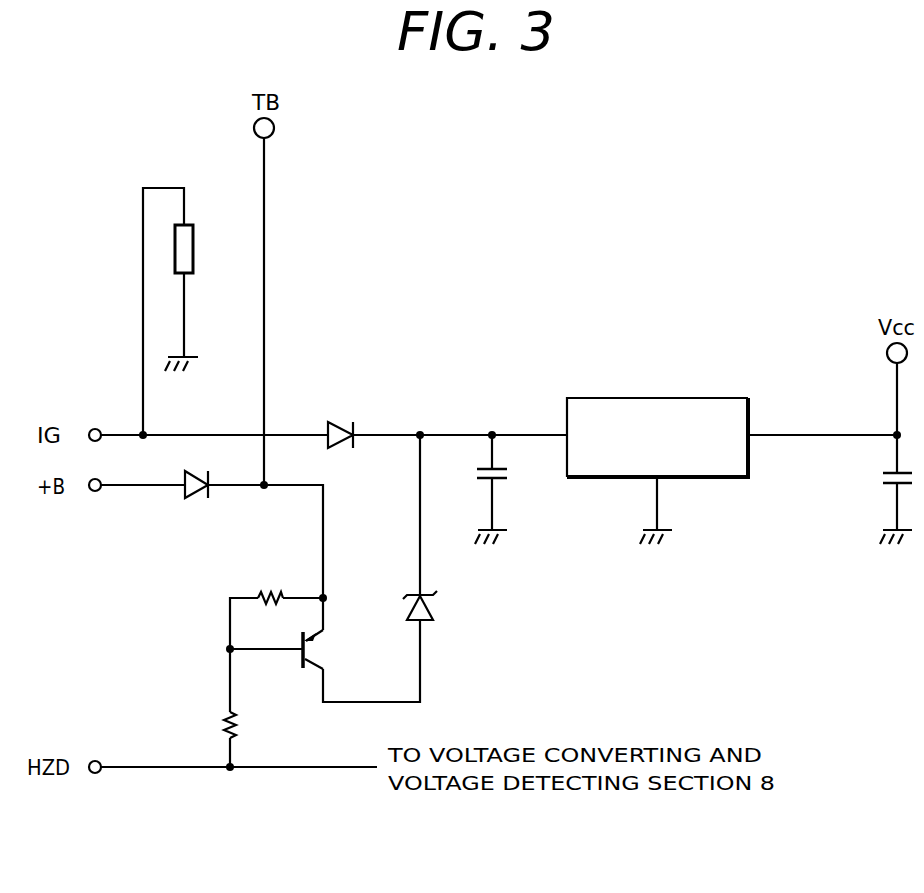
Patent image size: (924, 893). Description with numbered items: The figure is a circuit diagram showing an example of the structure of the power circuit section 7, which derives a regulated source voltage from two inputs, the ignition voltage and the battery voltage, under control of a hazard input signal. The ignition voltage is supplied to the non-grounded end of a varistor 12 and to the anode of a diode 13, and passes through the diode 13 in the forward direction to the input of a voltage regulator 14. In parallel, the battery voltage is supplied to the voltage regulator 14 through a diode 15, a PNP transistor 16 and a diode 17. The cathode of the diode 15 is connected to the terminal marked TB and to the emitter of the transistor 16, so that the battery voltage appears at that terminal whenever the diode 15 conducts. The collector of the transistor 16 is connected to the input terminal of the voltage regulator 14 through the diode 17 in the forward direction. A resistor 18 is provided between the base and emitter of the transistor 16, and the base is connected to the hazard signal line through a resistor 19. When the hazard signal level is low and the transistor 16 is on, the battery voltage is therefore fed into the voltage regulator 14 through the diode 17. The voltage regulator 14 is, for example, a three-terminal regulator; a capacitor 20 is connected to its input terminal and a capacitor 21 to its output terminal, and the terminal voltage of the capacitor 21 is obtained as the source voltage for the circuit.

The power circuit section 7 is at (541, 238).
The varistor 12 is at (194, 243).
The diode 13 is at (343, 420).
The voltage regulator 14 is at (685, 398).
The diode 15 is at (196, 500).
The PNP transistor 16 is at (322, 650).
The diode 17 is at (435, 607).
The resistor 18 is at (270, 594).
The resistor 19 is at (238, 722).
The capacitor 20 is at (498, 481).
The capacitor 21 is at (880, 477).